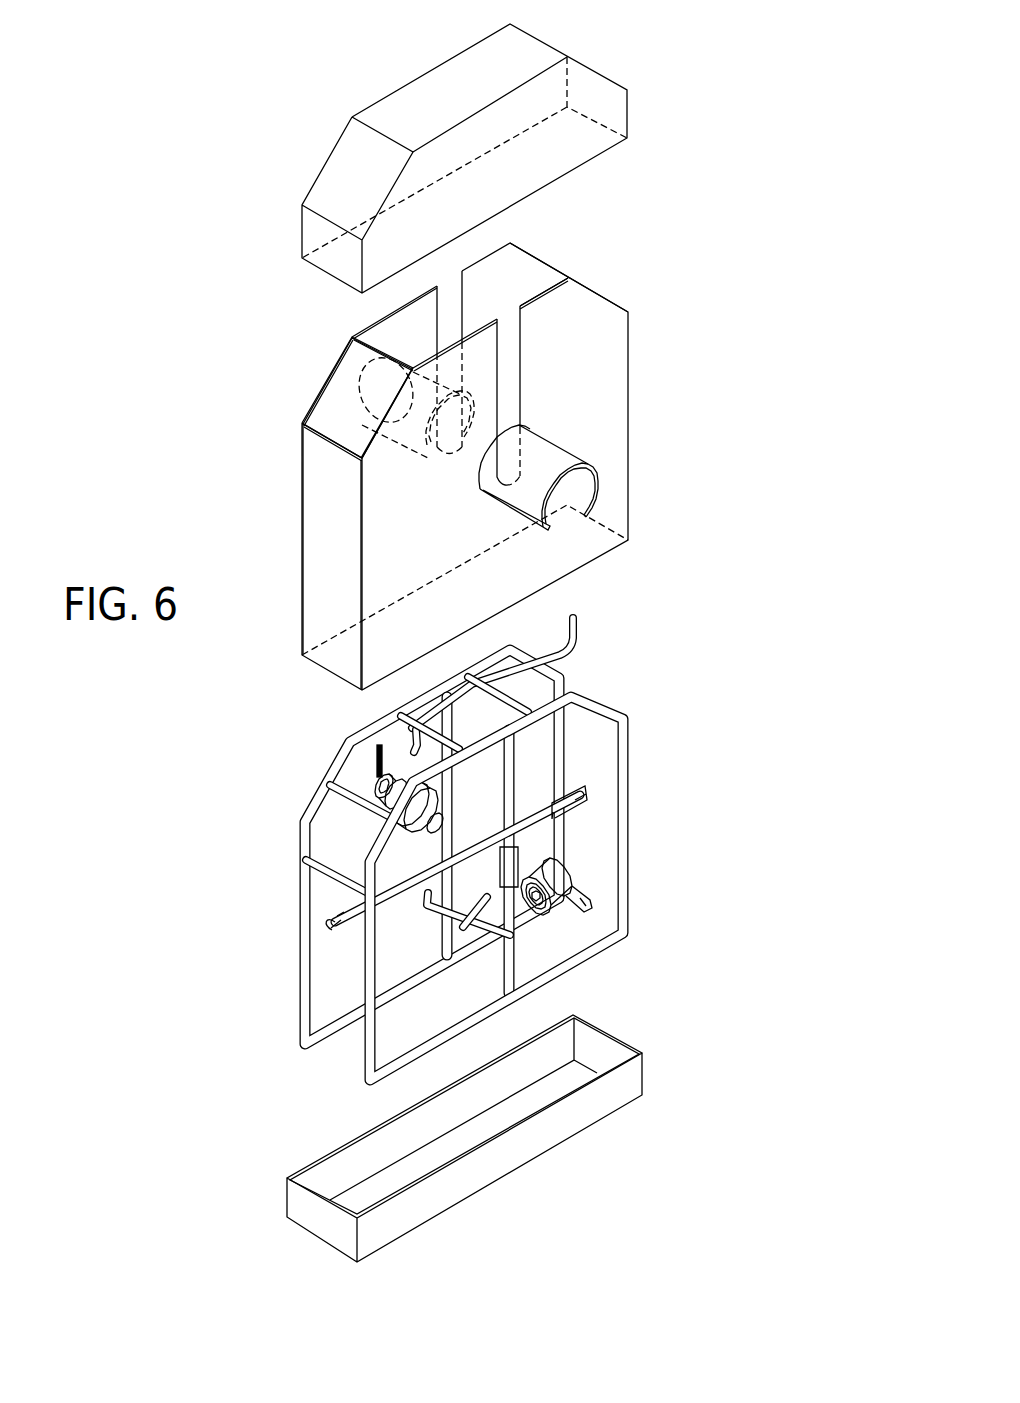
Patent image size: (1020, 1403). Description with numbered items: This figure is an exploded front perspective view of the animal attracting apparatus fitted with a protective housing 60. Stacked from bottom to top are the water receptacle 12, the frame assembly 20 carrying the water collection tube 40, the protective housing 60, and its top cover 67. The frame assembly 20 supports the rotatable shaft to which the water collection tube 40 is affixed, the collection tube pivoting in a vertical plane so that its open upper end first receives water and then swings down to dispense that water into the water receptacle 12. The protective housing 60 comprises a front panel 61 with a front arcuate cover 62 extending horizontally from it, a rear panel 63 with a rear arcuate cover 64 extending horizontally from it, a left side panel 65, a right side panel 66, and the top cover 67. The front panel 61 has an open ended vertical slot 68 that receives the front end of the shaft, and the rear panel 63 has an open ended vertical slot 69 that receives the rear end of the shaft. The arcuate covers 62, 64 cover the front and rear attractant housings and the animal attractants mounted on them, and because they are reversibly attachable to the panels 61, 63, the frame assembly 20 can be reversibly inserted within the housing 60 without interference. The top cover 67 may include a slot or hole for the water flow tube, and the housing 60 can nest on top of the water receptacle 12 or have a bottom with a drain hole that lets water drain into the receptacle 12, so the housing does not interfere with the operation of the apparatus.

The water receptacle 12 is at (655, 1077).
The frame assembly 20 is at (421, 849).
The water collection tube 40 is at (397, 905).
The protective housing 60 is at (650, 357).
The front panel 61 is at (541, 275).
The front arcuate cover 62 is at (548, 450).
The rear panel 63 is at (326, 388).
The rear arcuate cover 64 is at (390, 362).
The left side panel 65 is at (330, 465).
The right side panel 66 is at (613, 510).
The top cover 67 is at (650, 103).
The vertical slot 68 is at (514, 352).
The vertical slot 69 is at (452, 294).